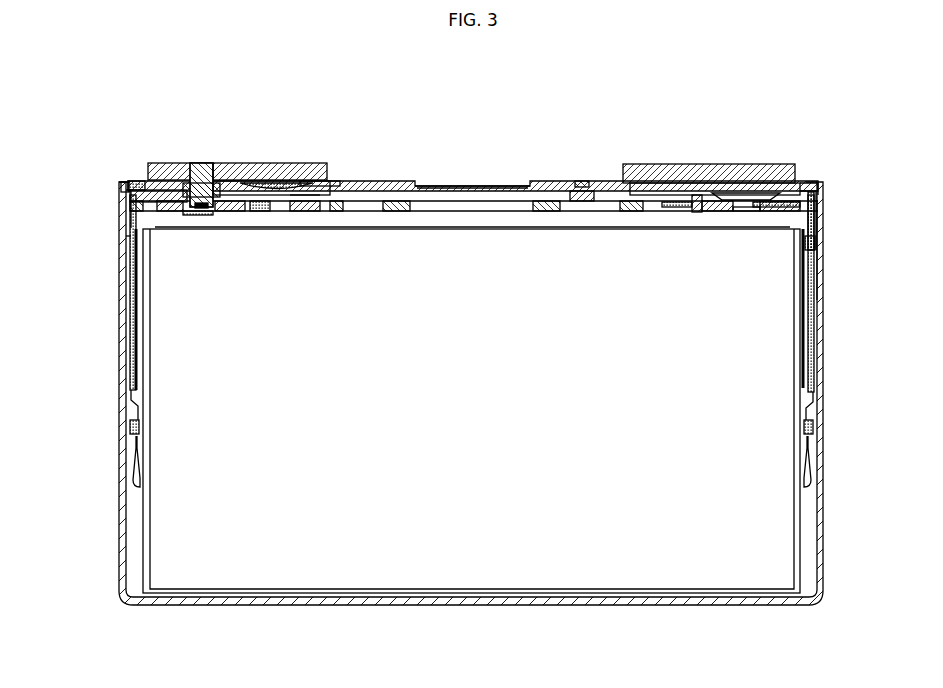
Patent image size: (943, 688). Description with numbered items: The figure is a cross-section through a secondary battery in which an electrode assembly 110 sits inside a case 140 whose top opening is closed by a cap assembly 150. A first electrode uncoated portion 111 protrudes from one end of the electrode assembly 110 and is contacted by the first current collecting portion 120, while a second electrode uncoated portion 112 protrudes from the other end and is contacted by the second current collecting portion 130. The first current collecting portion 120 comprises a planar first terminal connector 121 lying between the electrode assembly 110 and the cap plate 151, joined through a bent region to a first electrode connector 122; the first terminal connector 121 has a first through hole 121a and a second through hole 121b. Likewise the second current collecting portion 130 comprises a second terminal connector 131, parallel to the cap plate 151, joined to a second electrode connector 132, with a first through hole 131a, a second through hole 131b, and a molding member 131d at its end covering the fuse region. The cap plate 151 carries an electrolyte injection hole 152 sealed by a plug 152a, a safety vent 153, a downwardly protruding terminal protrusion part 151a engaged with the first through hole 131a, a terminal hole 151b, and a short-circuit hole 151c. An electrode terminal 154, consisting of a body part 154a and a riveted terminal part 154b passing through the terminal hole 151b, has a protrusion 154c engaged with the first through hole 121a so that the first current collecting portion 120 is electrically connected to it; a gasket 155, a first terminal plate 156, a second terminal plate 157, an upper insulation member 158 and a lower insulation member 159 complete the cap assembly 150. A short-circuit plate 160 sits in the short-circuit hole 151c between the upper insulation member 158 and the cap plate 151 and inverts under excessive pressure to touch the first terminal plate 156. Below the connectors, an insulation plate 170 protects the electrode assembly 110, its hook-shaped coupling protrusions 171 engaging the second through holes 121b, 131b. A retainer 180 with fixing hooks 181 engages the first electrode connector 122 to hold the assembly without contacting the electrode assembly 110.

The electrode assembly 110 is at (256, 581).
The first electrode uncoated portion 111 is at (137, 300).
The second electrode uncoated portion 112 is at (803, 341).
The first current collecting portion 120 is at (57, 200).
The first terminal connector 121 is at (128, 217).
The first through hole 121a is at (198, 214).
The second through hole 121b is at (262, 212).
The first electrode connector 122 is at (128, 240).
The second current collecting portion 130 is at (793, 219).
The second terminal connector 131 is at (818, 208).
The first through hole 131a is at (740, 211).
The second through hole 131b is at (700, 212).
The molding member 131d is at (818, 192).
The second electrode connector 132 is at (813, 242).
The case 140 is at (818, 291).
The cap assembly 150 is at (491, 177).
The cap plate 151 is at (407, 181).
The terminal protrusion part 151a is at (752, 211).
The terminal hole 151b is at (208, 208).
The short-circuit hole 151c is at (298, 196).
The electrolyte injection hole 152 is at (580, 196).
The plug 152a is at (580, 183).
The safety vent 153 is at (478, 184).
The electrode terminal 154 is at (228, 143).
The body part 154a is at (185, 192).
The terminal part 154b is at (203, 168).
The protrusion 154c is at (242, 148).
The gasket 155 is at (150, 181).
The first terminal plate 156 is at (287, 162).
The second terminal plate 157 is at (762, 166).
The upper insulation member 158 is at (343, 181).
The lower insulation member 159 is at (128, 186).
The short-circuit plate 160 is at (305, 182).
The insulation plate 170 is at (603, 196).
The coupling protrusions 171 is at (716, 190).
The retainer 180 is at (132, 366).
The fixing hooks 181 is at (135, 428).